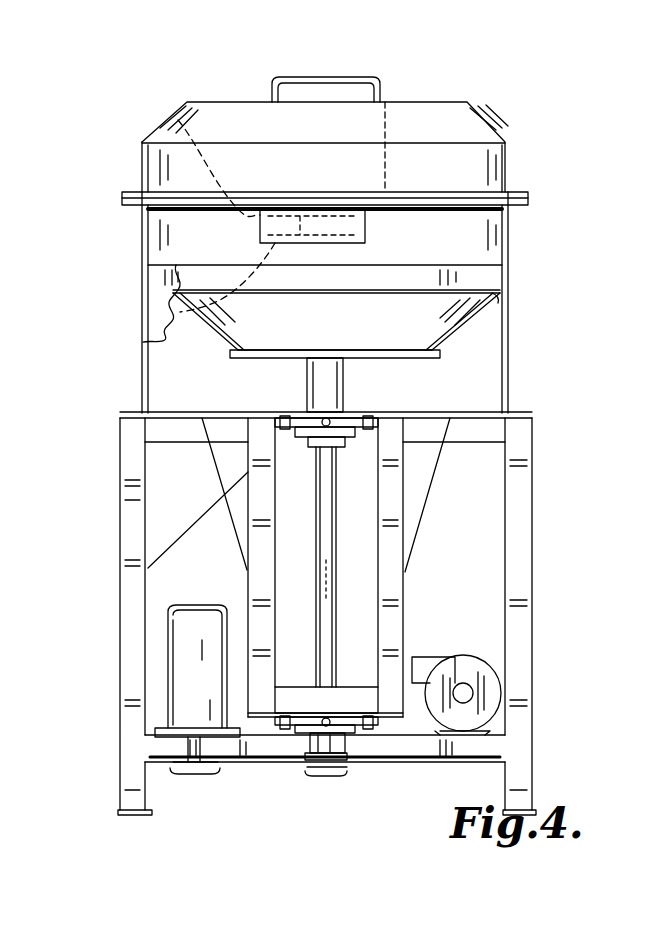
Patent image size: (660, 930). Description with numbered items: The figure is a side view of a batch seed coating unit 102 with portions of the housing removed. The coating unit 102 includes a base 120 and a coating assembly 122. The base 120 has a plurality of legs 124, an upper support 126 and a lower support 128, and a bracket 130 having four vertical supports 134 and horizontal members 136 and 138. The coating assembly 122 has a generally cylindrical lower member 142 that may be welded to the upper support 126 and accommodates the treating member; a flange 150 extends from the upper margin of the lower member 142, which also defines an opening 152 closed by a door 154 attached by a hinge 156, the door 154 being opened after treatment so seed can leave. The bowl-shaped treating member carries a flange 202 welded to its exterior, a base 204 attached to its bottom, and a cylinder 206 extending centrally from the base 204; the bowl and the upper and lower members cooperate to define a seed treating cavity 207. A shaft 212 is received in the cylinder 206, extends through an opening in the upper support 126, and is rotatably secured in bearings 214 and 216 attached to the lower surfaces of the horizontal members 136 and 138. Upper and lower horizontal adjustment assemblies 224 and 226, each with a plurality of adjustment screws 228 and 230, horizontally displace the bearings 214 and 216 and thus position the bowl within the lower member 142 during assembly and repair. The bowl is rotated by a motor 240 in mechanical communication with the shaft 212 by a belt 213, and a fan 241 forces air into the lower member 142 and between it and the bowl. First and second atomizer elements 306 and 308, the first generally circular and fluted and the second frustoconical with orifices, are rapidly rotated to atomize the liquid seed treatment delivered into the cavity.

The coating unit 102 is at (544, 518).
The base 120 is at (493, 672).
The coating assembly 122 is at (512, 344).
The legs 124 is at (124, 630).
The upper support 126 is at (533, 480).
The lower support 128 is at (158, 762).
The bracket 130 is at (338, 538).
The vertical supports 134 is at (247, 572).
The horizontal member 136 is at (366, 684).
The horizontal member 138 is at (418, 548).
The lower member 142 is at (437, 345).
The flange 150 is at (126, 207).
The opening 152 is at (350, 213).
The door 154 is at (327, 213).
The hinge 156 is at (368, 240).
The flange 202 is at (498, 303).
The base 204 is at (345, 368).
The cylinder 206 is at (343, 385).
The seed treating cavity 207 is at (178, 120).
The shaft 212 is at (408, 572).
The belt 213 is at (230, 767).
The bearing 214 is at (283, 428).
The bearing 216 is at (341, 735).
The upper horizontal adjustment assembly 224 is at (293, 418).
The lower horizontal adjustment assembly 226 is at (300, 727).
The adjustment screws 228 is at (285, 418).
The adjustment screws 230 is at (284, 731).
The motor 240 is at (170, 668).
The fan 241 is at (476, 692).
The first atomizer element 306 is at (176, 277).
The second atomizer element 308 is at (168, 312).